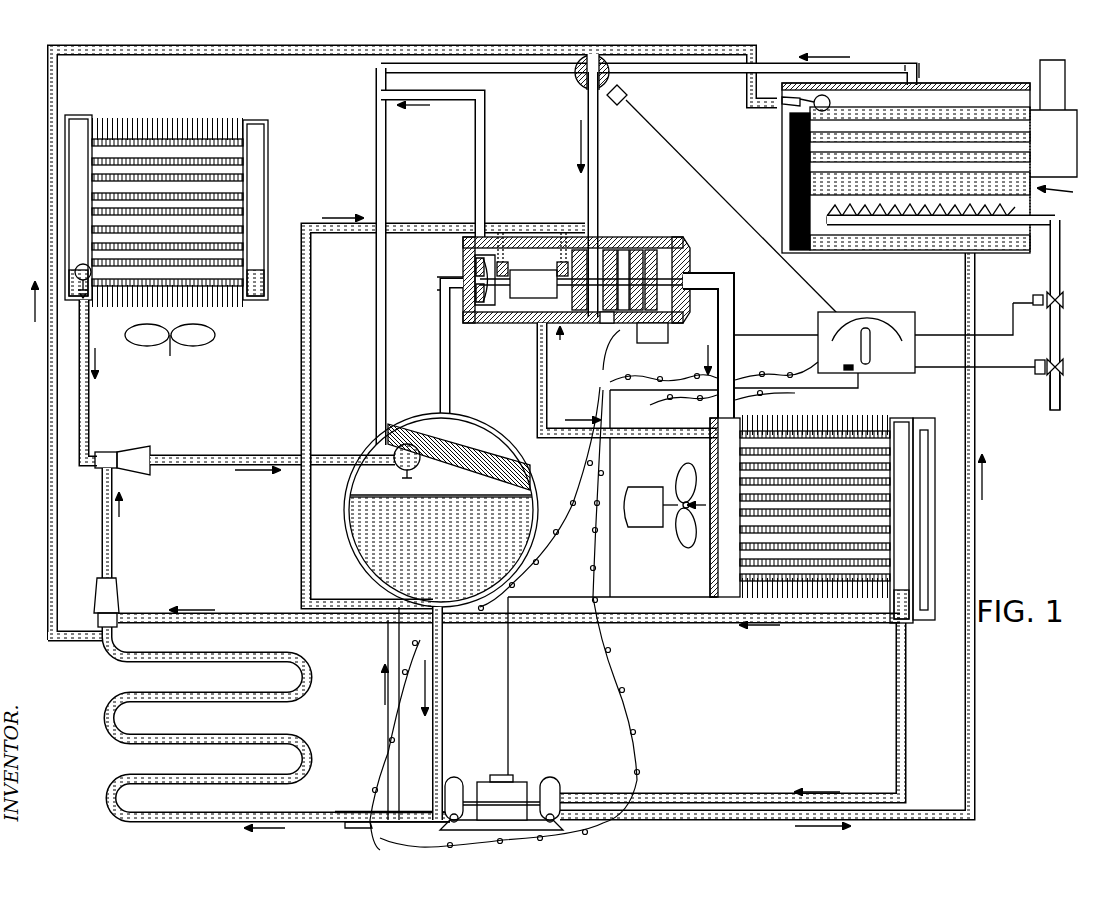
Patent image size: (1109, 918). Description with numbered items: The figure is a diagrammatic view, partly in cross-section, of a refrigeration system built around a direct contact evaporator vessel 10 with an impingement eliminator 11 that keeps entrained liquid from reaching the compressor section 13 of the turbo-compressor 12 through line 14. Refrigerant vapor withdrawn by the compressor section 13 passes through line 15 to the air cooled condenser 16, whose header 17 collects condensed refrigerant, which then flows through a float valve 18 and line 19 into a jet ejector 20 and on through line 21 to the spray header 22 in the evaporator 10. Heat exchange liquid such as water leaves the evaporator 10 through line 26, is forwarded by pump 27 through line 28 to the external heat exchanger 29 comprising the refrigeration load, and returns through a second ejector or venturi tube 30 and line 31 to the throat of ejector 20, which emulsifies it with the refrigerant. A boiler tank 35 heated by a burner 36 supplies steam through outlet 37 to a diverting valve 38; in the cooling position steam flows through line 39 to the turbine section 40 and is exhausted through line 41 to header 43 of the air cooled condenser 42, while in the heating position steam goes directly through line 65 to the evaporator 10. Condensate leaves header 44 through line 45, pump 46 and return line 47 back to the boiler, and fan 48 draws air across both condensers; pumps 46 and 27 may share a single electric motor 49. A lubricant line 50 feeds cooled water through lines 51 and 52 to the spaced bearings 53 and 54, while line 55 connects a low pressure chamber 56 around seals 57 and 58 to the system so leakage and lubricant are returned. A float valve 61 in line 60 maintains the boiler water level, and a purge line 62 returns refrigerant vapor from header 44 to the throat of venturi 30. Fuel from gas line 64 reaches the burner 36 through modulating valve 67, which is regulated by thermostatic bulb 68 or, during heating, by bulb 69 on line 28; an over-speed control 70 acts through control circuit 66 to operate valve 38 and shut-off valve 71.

The evaporator vessel 10 is at (346, 516).
The eliminator 11 is at (478, 448).
The turbo-compressor 12 is at (504, 317).
The compressor section 13 is at (468, 265).
The line 14 is at (448, 395).
The line 15 is at (486, 146).
The condenser 16 is at (183, 118).
The header 17 is at (78, 115).
The float valve 18 is at (82, 264).
The line 19 is at (90, 308).
The jet ejector 20 is at (107, 452).
The line 21 is at (277, 456).
The spray header 22 is at (420, 463).
The line 26 is at (442, 700).
The pump 27 is at (457, 783).
The line 28 is at (395, 820).
The external heat exchanger 29 is at (310, 748).
The second ejector 30 is at (119, 604).
The line 31 is at (113, 527).
The boiler tank 35 is at (937, 156).
The heat source 36 is at (1016, 219).
The outlet 37 is at (920, 70).
The valve 38 is at (584, 84).
The line 39 is at (599, 146).
The turbine section 40 is at (604, 318).
The line 41 is at (728, 350).
The condenser 42 is at (832, 418).
The header 43 is at (715, 462).
The header 44 is at (905, 468).
The line 45 is at (907, 682).
The pump 46 is at (550, 783).
The return line 47 is at (975, 404).
The fan 48 is at (630, 518).
The electric motor 49 is at (515, 790).
The lubricant line 50 is at (302, 380).
The line 51 is at (522, 233).
The line 52 is at (578, 233).
The bearing 53 is at (512, 270).
The bearing 54 is at (533, 284).
The line 55 is at (545, 401).
The chamber 56 is at (530, 324).
The seal 57 is at (490, 324).
The seal 58 is at (582, 324).
The line 60 is at (341, 54).
The float valve 61 is at (782, 109).
The purge line 62 is at (690, 613).
The gas line 64 is at (1051, 399).
The line 65 is at (539, 76).
The control circuit 66 is at (888, 366).
The modulating valve 67 is at (1060, 298).
The thermostatic bulb 68 is at (341, 811).
The bulb 69 is at (368, 826).
The over-speed control 70 is at (660, 335).
The shut-off valve 71 is at (1058, 368).